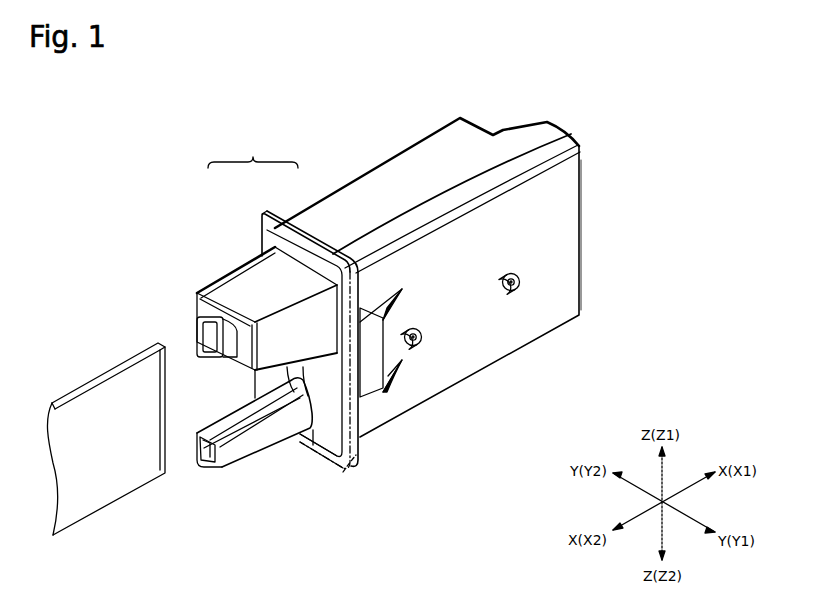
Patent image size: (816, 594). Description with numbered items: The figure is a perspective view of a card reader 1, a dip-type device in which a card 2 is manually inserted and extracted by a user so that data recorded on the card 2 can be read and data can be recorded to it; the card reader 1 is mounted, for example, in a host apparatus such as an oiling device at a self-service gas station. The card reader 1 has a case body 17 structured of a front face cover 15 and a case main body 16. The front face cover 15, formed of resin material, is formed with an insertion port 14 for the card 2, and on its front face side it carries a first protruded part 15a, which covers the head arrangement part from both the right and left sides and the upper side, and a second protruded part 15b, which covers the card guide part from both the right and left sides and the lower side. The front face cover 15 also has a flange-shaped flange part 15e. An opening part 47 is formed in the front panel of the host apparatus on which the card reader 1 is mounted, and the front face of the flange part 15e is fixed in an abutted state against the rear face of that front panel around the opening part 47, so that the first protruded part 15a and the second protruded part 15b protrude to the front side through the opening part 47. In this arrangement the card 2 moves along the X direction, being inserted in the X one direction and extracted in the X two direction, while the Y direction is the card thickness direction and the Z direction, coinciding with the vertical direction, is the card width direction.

The card reader 1 is at (139, 160).
The card 2 is at (107, 373).
The insertion port 14 is at (206, 337).
The front face cover 15 is at (233, 263).
The first protruded part 15a is at (205, 290).
The second protruded part 15b is at (251, 455).
The flange part 15e is at (344, 462).
The case main body 16 is at (293, 215).
The case body 17 is at (253, 154).
The opening part 47 is at (343, 472).